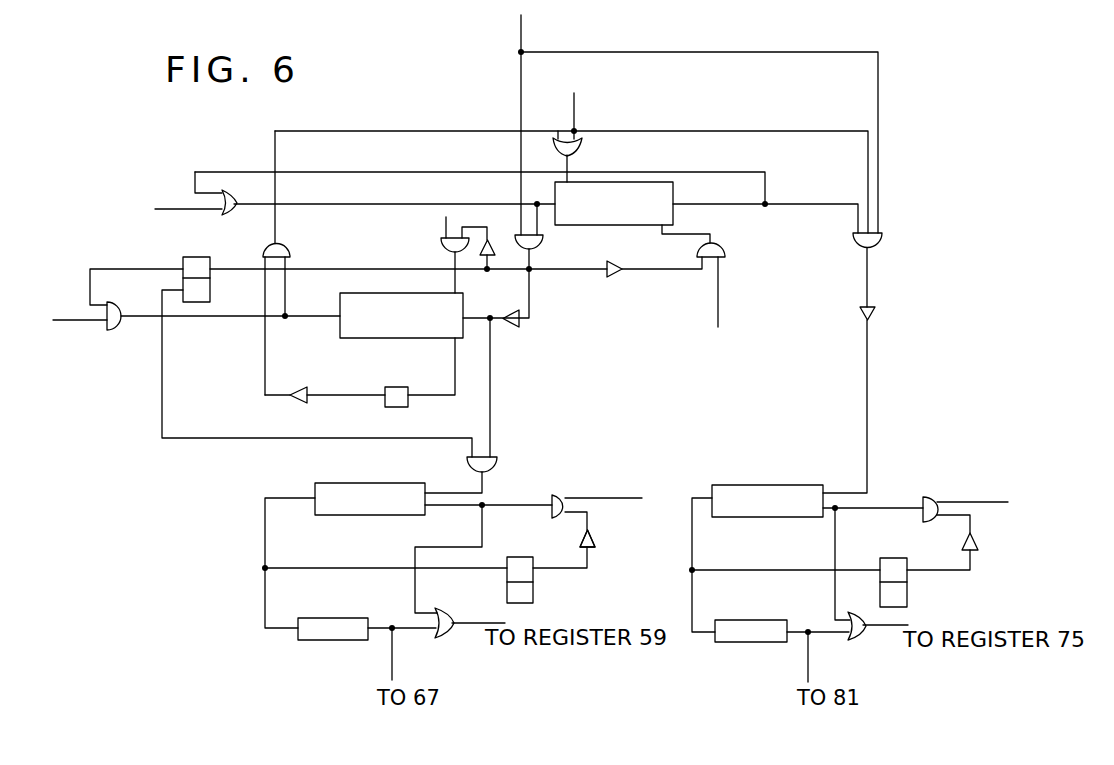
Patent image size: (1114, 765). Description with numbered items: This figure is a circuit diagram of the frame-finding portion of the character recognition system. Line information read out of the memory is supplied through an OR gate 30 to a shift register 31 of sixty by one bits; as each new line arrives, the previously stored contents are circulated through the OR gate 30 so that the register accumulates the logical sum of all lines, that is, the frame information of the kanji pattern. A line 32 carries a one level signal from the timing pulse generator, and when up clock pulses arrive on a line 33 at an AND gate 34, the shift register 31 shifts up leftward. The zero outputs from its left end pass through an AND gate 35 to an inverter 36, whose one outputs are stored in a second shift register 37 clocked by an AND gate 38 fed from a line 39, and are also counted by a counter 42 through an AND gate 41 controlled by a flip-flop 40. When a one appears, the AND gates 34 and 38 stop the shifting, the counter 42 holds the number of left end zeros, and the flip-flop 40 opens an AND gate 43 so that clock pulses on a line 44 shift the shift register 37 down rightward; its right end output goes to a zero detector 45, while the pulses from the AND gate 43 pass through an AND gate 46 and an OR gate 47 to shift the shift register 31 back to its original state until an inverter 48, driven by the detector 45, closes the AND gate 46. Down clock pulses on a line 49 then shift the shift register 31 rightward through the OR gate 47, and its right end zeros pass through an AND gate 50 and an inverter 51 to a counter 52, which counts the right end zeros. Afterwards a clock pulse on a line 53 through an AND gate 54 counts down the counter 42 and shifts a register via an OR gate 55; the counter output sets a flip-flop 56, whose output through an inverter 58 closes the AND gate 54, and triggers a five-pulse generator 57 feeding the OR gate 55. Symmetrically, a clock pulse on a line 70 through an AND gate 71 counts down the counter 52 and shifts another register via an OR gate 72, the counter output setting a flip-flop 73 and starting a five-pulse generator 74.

The OR gate 30 is at (230, 198).
The shift register 31 is at (674, 190).
The line 32 is at (519, 36).
The line 33 is at (719, 303).
The AND gate 34 is at (722, 246).
The AND gate 35 is at (540, 243).
The inverter 36 is at (511, 328).
The shift register 37 is at (412, 339).
The AND gate 38 is at (442, 248).
The line 39 is at (446, 231).
The flip-flop 40 is at (210, 258).
The AND gate 41 is at (496, 463).
The counter 42 is at (374, 483).
The AND gate 43 is at (117, 331).
The line 44 is at (70, 321).
The 0 detector 45 is at (398, 408).
The AND gate 46 is at (289, 248).
The OR gate 47 is at (582, 148).
The inverter 48 is at (293, 404).
The line 49 is at (576, 108).
The AND gate 50 is at (880, 245).
The inverter 51 is at (874, 303).
The counter 52 is at (768, 484).
The line 53 is at (617, 497).
The AND gate 54 is at (558, 495).
The OR gate 55 is at (449, 616).
The flip-flop 56 is at (521, 556).
The 5-pulse generator 57 is at (333, 617).
The inverter 58 is at (596, 538).
The line 70 is at (987, 502).
The AND gate 71 is at (924, 500).
The OR gate 72 is at (860, 641).
The flip-flop 73 is at (894, 557).
The 5-pulse generator 74 is at (752, 619).